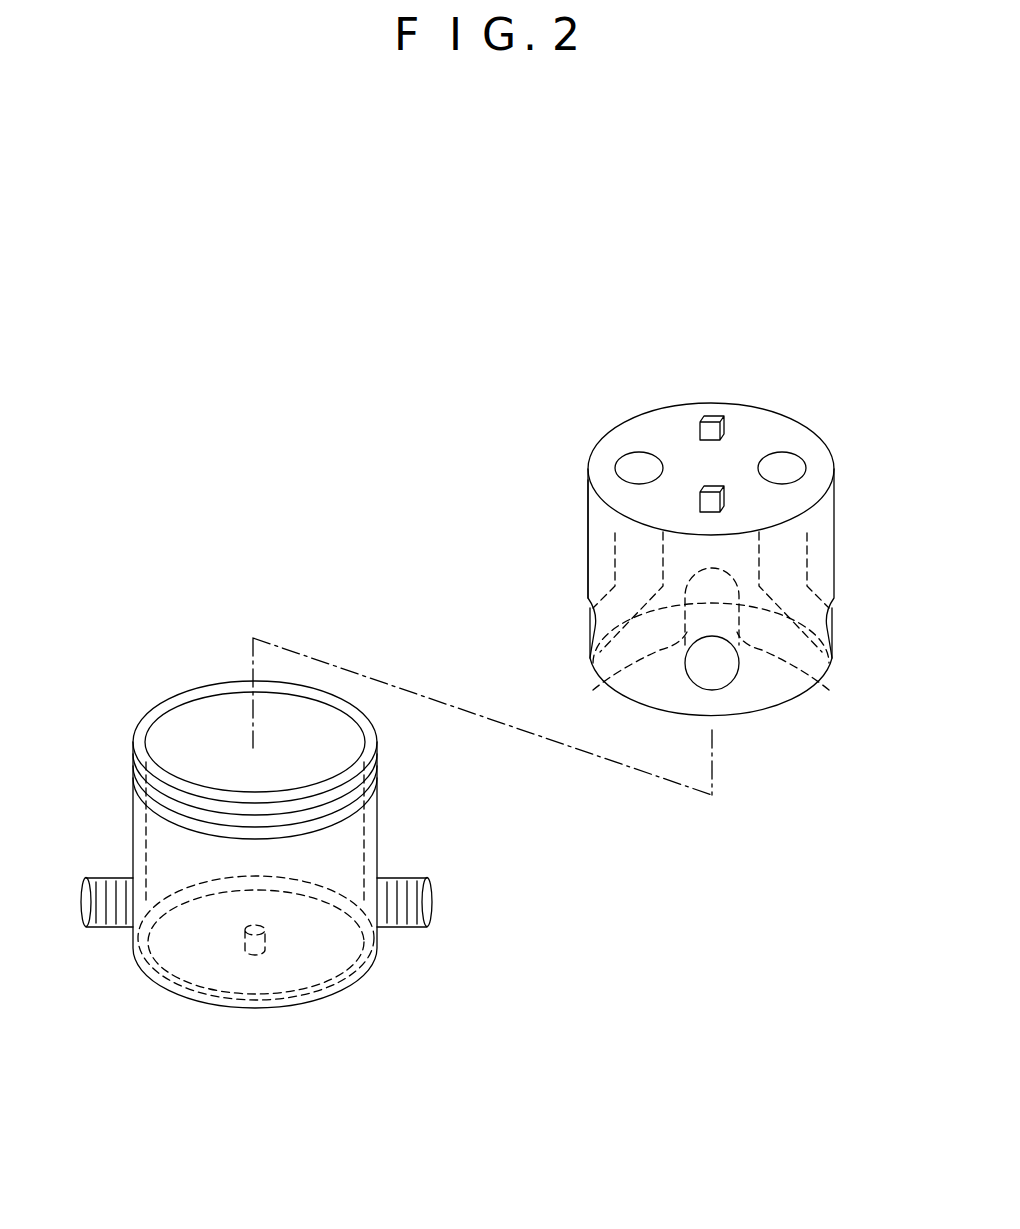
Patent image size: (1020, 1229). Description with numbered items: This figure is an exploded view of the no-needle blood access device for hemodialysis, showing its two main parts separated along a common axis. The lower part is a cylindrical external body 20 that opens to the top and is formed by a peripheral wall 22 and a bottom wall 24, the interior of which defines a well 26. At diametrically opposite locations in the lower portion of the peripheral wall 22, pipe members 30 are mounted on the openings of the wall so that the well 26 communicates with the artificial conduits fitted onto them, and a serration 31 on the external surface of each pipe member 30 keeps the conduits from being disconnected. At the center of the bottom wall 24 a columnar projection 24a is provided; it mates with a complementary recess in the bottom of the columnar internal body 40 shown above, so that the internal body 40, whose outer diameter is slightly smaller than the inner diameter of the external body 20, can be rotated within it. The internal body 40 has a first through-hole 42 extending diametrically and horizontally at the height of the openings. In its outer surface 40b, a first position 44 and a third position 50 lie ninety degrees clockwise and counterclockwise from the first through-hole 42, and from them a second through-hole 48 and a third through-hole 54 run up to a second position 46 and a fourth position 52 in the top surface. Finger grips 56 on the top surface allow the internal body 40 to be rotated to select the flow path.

The external body 20 is at (385, 803).
The peripheral wall 22 is at (133, 822).
The bottom wall 24 is at (305, 972).
The columnar projection 24a is at (247, 952).
The well 26 is at (203, 718).
The pipe members 30 is at (103, 927).
The serration 31 is at (103, 878).
The internal body 40 is at (622, 412).
The outer surface 40b is at (590, 497).
The first through-hole 42 is at (597, 683).
The first position 44 is at (590, 636).
The second position 46 is at (638, 462).
The second through-hole 48 is at (620, 545).
The third position 50 is at (833, 637).
The fourth position 52 is at (783, 462).
The third through-hole 54 is at (812, 548).
The finger grips 56 is at (712, 418).